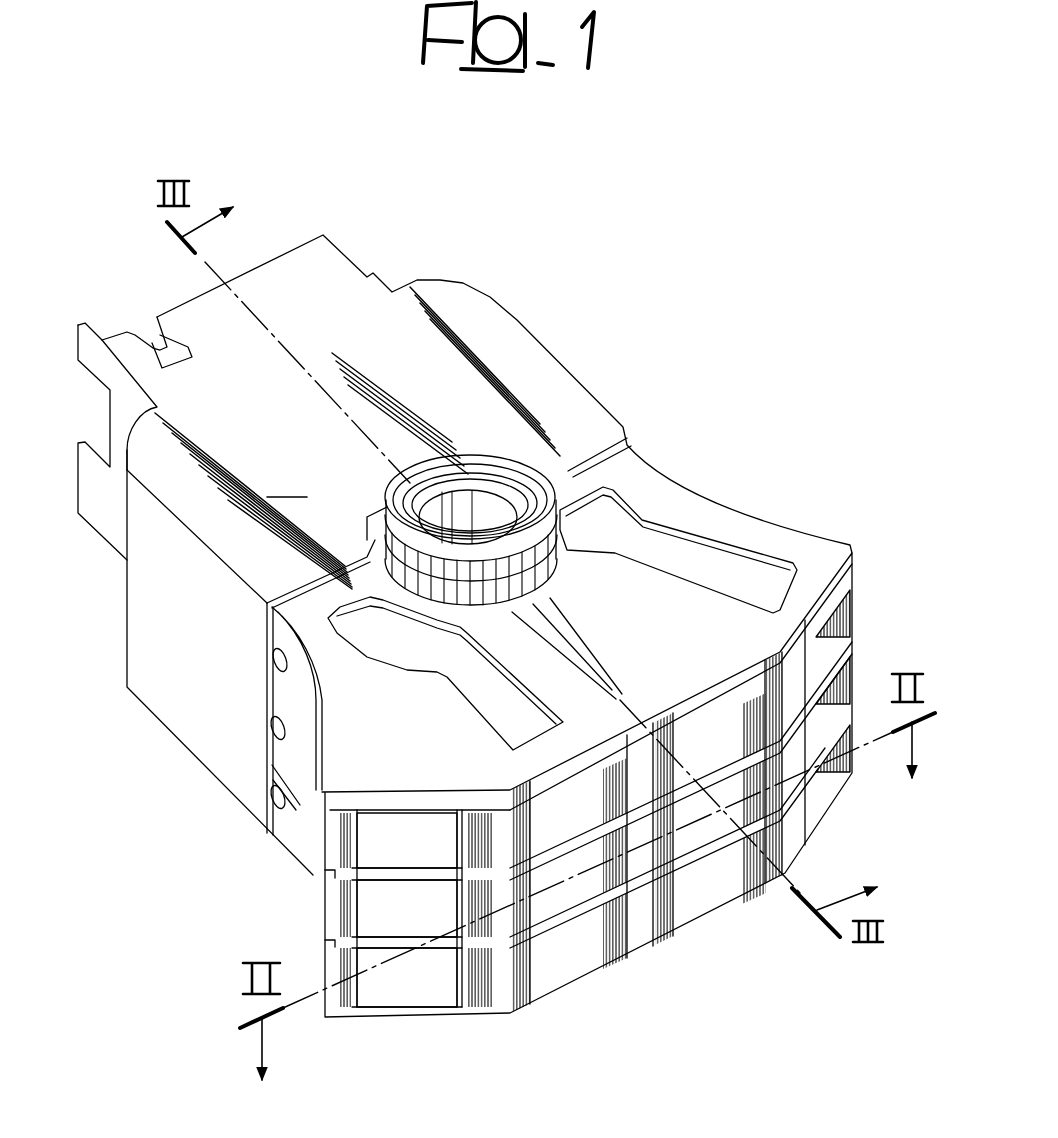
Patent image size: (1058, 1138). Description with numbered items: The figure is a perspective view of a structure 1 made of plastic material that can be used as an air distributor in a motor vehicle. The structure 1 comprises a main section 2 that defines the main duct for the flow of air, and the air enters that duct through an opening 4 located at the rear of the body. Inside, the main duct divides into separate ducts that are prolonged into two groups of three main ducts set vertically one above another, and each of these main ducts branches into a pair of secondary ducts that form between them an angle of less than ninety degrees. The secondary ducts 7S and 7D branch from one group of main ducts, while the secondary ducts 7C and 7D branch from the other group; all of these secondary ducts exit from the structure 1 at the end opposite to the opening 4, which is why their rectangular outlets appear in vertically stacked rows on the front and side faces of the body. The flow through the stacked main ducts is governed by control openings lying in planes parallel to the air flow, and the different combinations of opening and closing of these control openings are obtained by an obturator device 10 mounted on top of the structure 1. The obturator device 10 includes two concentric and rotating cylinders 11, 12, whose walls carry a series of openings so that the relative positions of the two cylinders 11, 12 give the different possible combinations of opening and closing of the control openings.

The structure 1 is at (578, 343).
The main section 2 is at (197, 720).
The opening 4 is at (150, 337).
The obturator device 10 is at (447, 437).
The cylinder 11 is at (470, 510).
The cylinder 12 is at (542, 566).
The secondary duct 7S is at (832, 763).
The secondary duct 7C is at (720, 748).
The secondary duct 7D is at (437, 850).